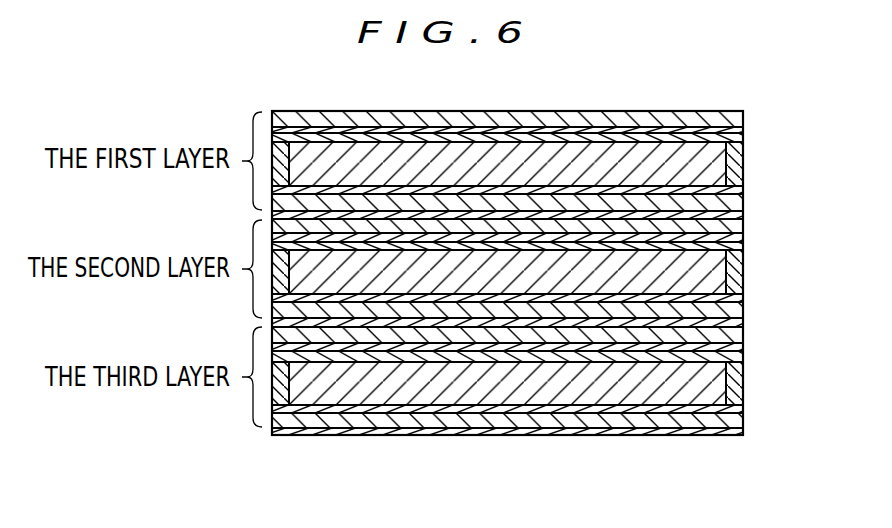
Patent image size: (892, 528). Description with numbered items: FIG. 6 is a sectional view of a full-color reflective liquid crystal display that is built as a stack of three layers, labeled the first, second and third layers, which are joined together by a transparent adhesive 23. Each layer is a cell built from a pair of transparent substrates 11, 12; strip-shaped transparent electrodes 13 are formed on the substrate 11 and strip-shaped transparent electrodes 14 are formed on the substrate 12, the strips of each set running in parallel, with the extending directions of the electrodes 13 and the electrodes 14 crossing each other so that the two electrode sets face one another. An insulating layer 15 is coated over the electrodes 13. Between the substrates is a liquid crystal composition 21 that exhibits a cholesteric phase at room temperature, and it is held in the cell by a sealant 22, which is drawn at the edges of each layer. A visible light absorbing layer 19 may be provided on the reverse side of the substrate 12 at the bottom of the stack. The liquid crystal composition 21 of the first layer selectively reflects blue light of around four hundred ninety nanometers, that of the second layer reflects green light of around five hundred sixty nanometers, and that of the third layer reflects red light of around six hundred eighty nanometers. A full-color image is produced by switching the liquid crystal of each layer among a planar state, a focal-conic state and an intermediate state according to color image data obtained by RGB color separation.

The transparent substrate 11 is at (743, 333).
The transparent substrate 12 is at (743, 420).
The transparent electrode 13 is at (743, 350).
The transparent electrode 14 is at (743, 410).
The insulating layer 15 is at (743, 357).
The visible light absorbing layer 19 is at (413, 437).
The liquid crystal composition 21 is at (579, 150).
The sealant 22 is at (727, 389).
The transparent adhesive 23 is at (743, 214).